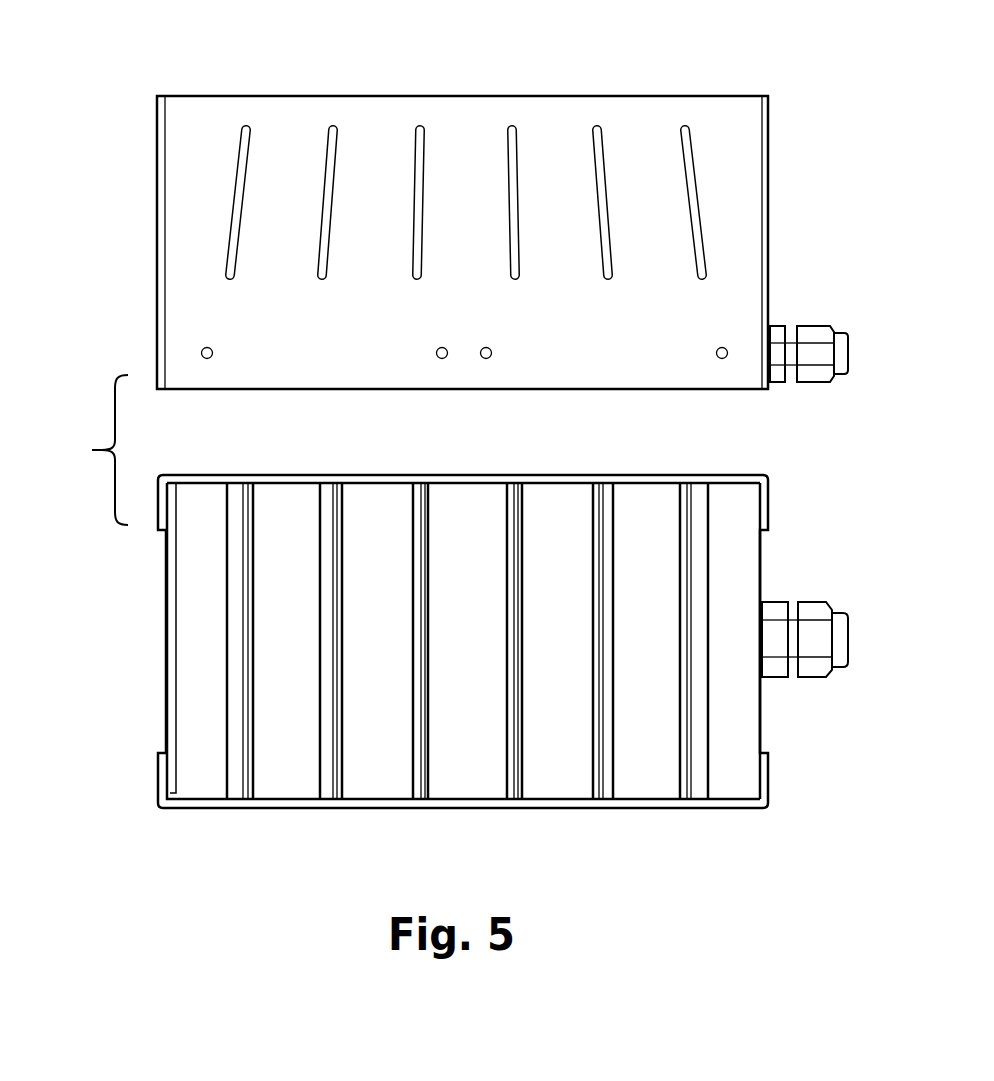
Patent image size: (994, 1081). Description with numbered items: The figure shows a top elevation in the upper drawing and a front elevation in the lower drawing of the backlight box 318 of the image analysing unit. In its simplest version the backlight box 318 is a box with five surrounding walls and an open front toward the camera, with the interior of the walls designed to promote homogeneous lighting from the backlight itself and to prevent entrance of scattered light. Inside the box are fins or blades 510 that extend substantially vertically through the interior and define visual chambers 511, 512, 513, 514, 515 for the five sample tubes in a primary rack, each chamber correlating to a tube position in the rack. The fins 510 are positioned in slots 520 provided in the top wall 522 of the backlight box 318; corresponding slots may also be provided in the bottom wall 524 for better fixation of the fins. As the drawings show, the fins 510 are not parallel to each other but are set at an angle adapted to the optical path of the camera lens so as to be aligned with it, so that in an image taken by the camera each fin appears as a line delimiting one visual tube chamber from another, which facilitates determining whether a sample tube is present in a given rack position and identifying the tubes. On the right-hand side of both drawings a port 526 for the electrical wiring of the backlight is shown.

The backlight box 318 is at (130, 632).
The fins or blades 510 is at (328, 752).
The visual chamber 511 is at (649, 512).
The visual chamber 512 is at (557, 512).
The visual chamber 513 is at (465, 512).
The visual chamber 514 is at (377, 512).
The visual chamber 515 is at (285, 512).
The slots 520 is at (333, 126).
The top wall 522 is at (753, 128).
The bottom wall 524 is at (740, 808).
The connector fitting 526 is at (815, 331).